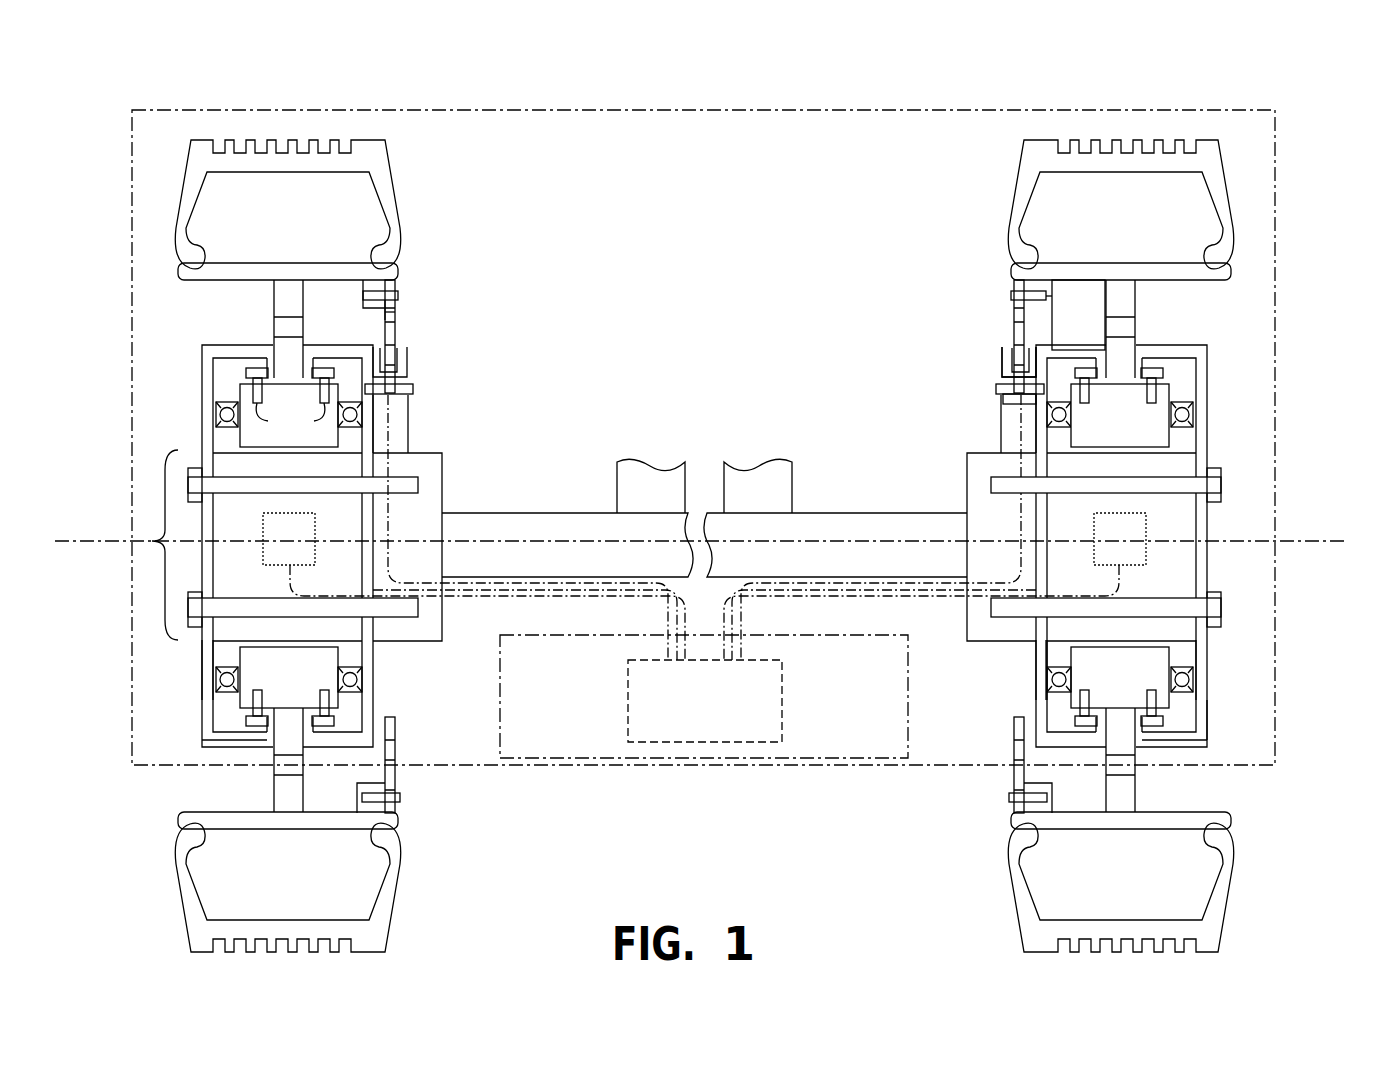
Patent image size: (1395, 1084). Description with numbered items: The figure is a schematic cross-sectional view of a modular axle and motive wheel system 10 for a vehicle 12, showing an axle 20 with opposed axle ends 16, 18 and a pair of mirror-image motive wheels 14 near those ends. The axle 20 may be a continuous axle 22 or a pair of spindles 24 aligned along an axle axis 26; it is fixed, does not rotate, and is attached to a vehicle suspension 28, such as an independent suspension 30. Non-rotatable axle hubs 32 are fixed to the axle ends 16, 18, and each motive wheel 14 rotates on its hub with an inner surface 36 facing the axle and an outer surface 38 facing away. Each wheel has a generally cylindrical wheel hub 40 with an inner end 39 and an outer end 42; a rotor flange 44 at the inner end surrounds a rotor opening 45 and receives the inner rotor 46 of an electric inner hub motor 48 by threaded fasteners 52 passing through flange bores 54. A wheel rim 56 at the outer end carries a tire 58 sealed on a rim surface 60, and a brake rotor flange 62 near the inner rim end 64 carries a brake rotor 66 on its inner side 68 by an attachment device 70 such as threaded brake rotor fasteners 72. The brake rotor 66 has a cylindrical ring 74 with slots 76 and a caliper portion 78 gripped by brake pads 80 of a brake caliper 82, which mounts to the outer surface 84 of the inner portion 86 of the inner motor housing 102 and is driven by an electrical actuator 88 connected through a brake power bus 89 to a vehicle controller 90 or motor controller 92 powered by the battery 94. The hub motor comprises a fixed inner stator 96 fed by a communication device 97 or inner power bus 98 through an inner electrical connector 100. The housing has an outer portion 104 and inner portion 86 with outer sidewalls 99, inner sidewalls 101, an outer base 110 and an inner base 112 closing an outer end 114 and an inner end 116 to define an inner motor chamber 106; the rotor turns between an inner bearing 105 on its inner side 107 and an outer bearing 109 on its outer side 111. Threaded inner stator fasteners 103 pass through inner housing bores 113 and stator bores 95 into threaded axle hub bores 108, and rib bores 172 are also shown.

The modular axle and motive wheel system 10 is at (716, 272).
The vehicle 12 is at (648, 108).
The motive wheel 14 is at (438, 146).
The axle end 16 is at (446, 513).
The axle end 18 is at (963, 513).
The axle 20 is at (600, 511).
The continuous axle 22 is at (667, 502).
The spindles 24 is at (522, 512).
The axle axis 26 is at (1343, 540).
The vehicle suspension 28 is at (738, 450).
The independent suspension 30 is at (640, 460).
The axle hub 32 is at (446, 458).
The inner surface 36 is at (306, 802).
The outer surface 38 is at (272, 795).
The inner end 39 is at (268, 372).
The wheel hub 40 is at (270, 302).
The outer end 42 is at (272, 283).
The rotor flange 44 is at (245, 382).
The rotor opening 45 is at (147, 542).
The inner rotor 46 is at (341, 438).
The electric inner hub motor 48 is at (198, 683).
The threaded fasteners 52 is at (289, 412).
The flange bores 54 is at (305, 706).
The wheel rim 56 is at (288, 262).
The tire 58 is at (210, 138).
The rim surface 60 is at (242, 263).
The brake rotor flange 62 is at (362, 300).
The inner rim end 64 is at (400, 284).
The brake rotor 66 is at (402, 297).
The inner side 68 is at (398, 289).
The attachment device 70 is at (449, 272).
The threaded brake rotor fasteners 72 is at (404, 292).
The cylindrical ring 74 is at (384, 308).
The slots 76 is at (402, 312).
The caliper portion 78 is at (393, 372).
The brake pads 80 is at (1037, 357).
The brake caliper 82 is at (1046, 371).
The outer surface 84 is at (1030, 394).
The inner portion 86 is at (378, 557).
The electrical actuator 88 is at (1044, 404).
The brake power bus 89 is at (641, 576).
The vehicle controller 90 is at (745, 701).
The motor controller 92 is at (790, 722).
The battery 94 is at (700, 766).
The stator bores 95 is at (1197, 470).
The inner stator 96 is at (350, 648).
The inner electrical power and/or signal communication device 97 is at (704, 623).
The inner power bus 98 is at (540, 597).
The outer sidewalls 99 is at (222, 742).
The inner electrical connector 100 is at (258, 527).
The inner sidewalls 101 is at (349, 747).
The inner motor housing 102 is at (1196, 752).
The threaded inner stator fasteners 103 is at (1223, 485).
The outer portion 104 is at (198, 648).
The inner bearing 105 is at (1042, 728).
The inner motor chamber 106 is at (225, 392).
The inner side 107 is at (1032, 746).
The threaded axle hub bores 108 is at (396, 604).
The outer bearing 109 is at (1197, 680).
The outer base 110 is at (1034, 692).
The outer side 111 is at (1196, 655).
The inner base 112 is at (1202, 708).
The inner housing bores 113 is at (208, 614).
The outer end 114 is at (1205, 745).
The inner end 116 is at (1054, 700).
The rib bores 172 is at (288, 767).